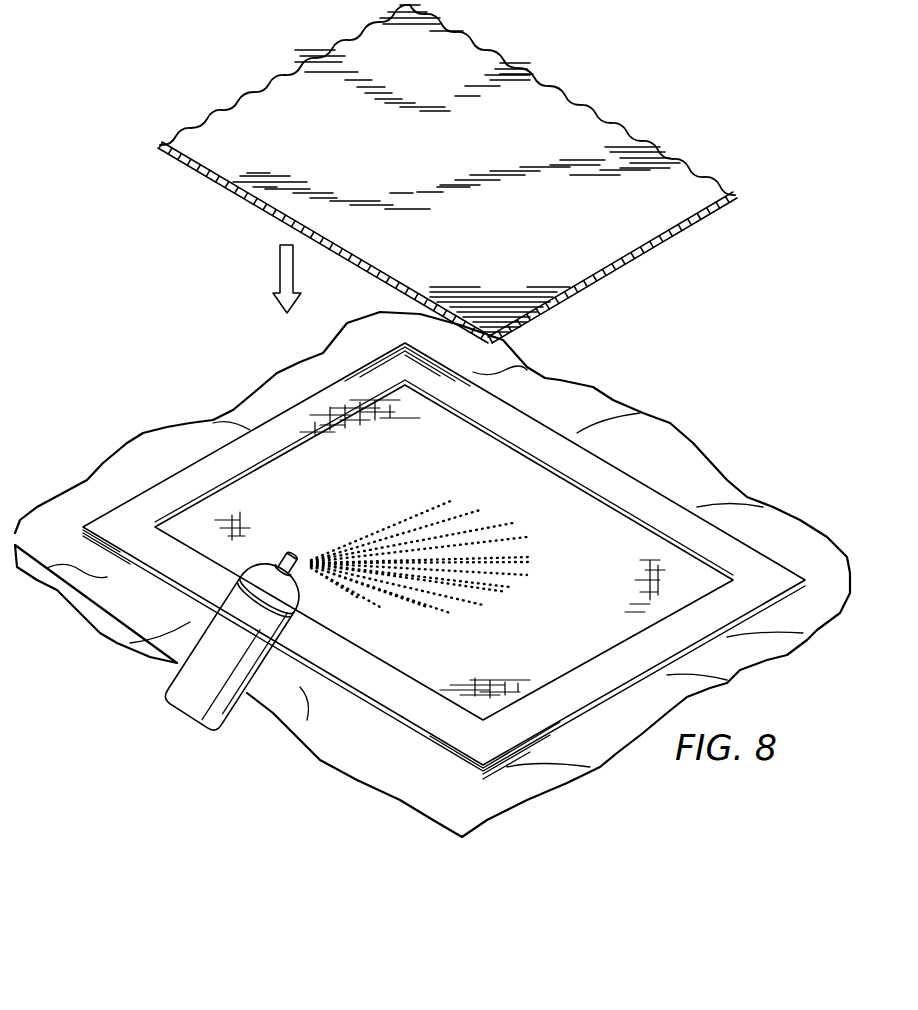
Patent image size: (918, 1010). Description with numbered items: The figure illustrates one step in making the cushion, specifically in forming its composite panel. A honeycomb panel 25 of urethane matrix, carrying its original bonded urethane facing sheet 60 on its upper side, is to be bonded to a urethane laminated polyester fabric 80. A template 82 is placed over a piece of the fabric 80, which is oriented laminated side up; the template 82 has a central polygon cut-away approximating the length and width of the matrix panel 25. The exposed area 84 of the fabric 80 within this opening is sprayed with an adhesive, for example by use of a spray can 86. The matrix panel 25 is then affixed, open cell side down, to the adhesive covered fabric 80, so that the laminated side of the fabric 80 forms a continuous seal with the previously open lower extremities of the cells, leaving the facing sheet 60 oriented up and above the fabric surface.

The bonded urethane facing sheet 60 is at (447, 174).
The honeycomb panel 25 is at (205, 175).
The urethane laminated polyester fabric 80 is at (587, 381).
The template 82 is at (428, 713).
The exposed area 84 is at (593, 522).
The spray can 86 is at (173, 703).